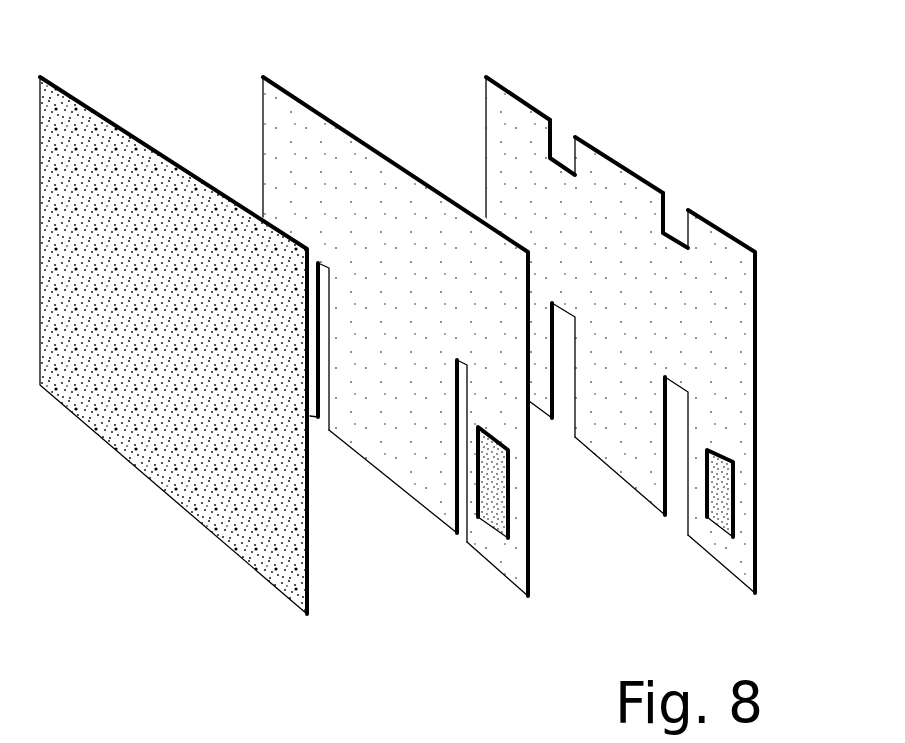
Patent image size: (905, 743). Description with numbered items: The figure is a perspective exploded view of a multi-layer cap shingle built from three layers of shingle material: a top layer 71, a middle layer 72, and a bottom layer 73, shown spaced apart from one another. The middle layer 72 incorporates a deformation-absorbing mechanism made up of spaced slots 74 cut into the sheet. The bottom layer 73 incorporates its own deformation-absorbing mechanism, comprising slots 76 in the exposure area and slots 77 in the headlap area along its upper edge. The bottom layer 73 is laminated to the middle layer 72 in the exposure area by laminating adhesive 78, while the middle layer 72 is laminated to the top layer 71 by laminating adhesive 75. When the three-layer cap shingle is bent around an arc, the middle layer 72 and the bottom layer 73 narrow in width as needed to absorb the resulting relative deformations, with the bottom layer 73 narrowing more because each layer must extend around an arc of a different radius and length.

The top layer 71 is at (85, 127).
The middle layer 72 is at (310, 142).
The bottom layer 73 is at (715, 323).
The spaced slots 74 is at (327, 392).
The laminating adhesive 75 is at (500, 502).
The slots in the exposure area 76 is at (562, 415).
The slots in the headlap area 77 is at (562, 135).
The laminating adhesive 78 is at (720, 493).